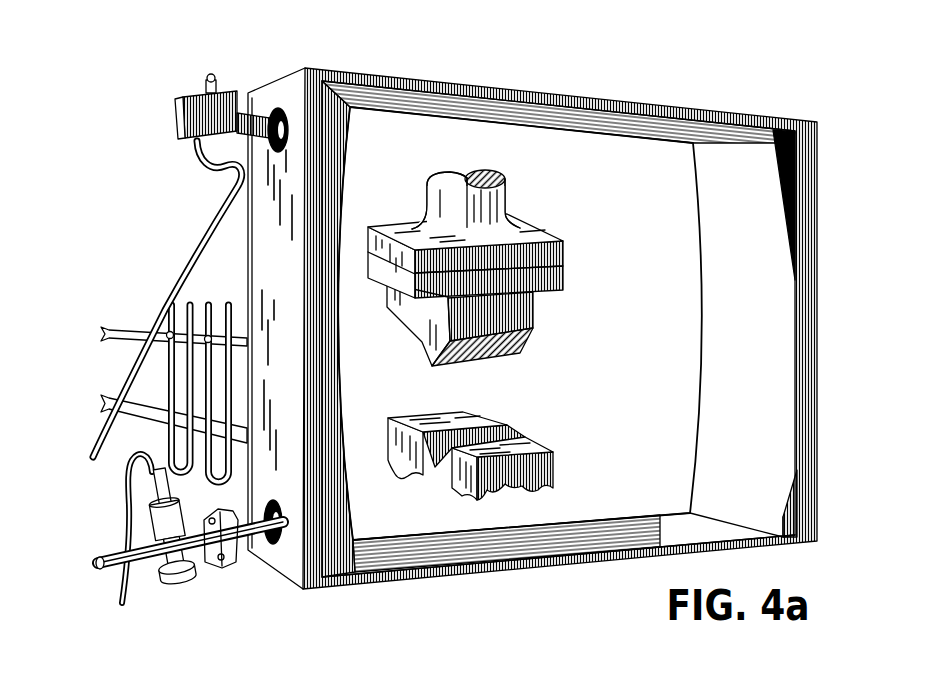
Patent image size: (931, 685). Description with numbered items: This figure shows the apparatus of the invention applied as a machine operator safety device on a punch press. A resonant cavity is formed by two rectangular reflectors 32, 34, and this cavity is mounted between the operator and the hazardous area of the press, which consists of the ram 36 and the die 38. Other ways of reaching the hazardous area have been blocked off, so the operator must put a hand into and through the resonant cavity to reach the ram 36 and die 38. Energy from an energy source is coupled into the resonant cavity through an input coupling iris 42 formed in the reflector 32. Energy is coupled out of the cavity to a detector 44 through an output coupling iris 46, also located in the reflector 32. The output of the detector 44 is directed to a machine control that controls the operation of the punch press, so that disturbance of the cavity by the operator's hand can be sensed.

The rectangular reflector 32 is at (312, 398).
The rectangular reflector 34 is at (812, 373).
The ram 36 is at (555, 250).
The die 38 is at (548, 472).
The input coupling iris 42 is at (281, 97).
The detector 44 is at (184, 512).
The output coupling iris 46 is at (270, 493).